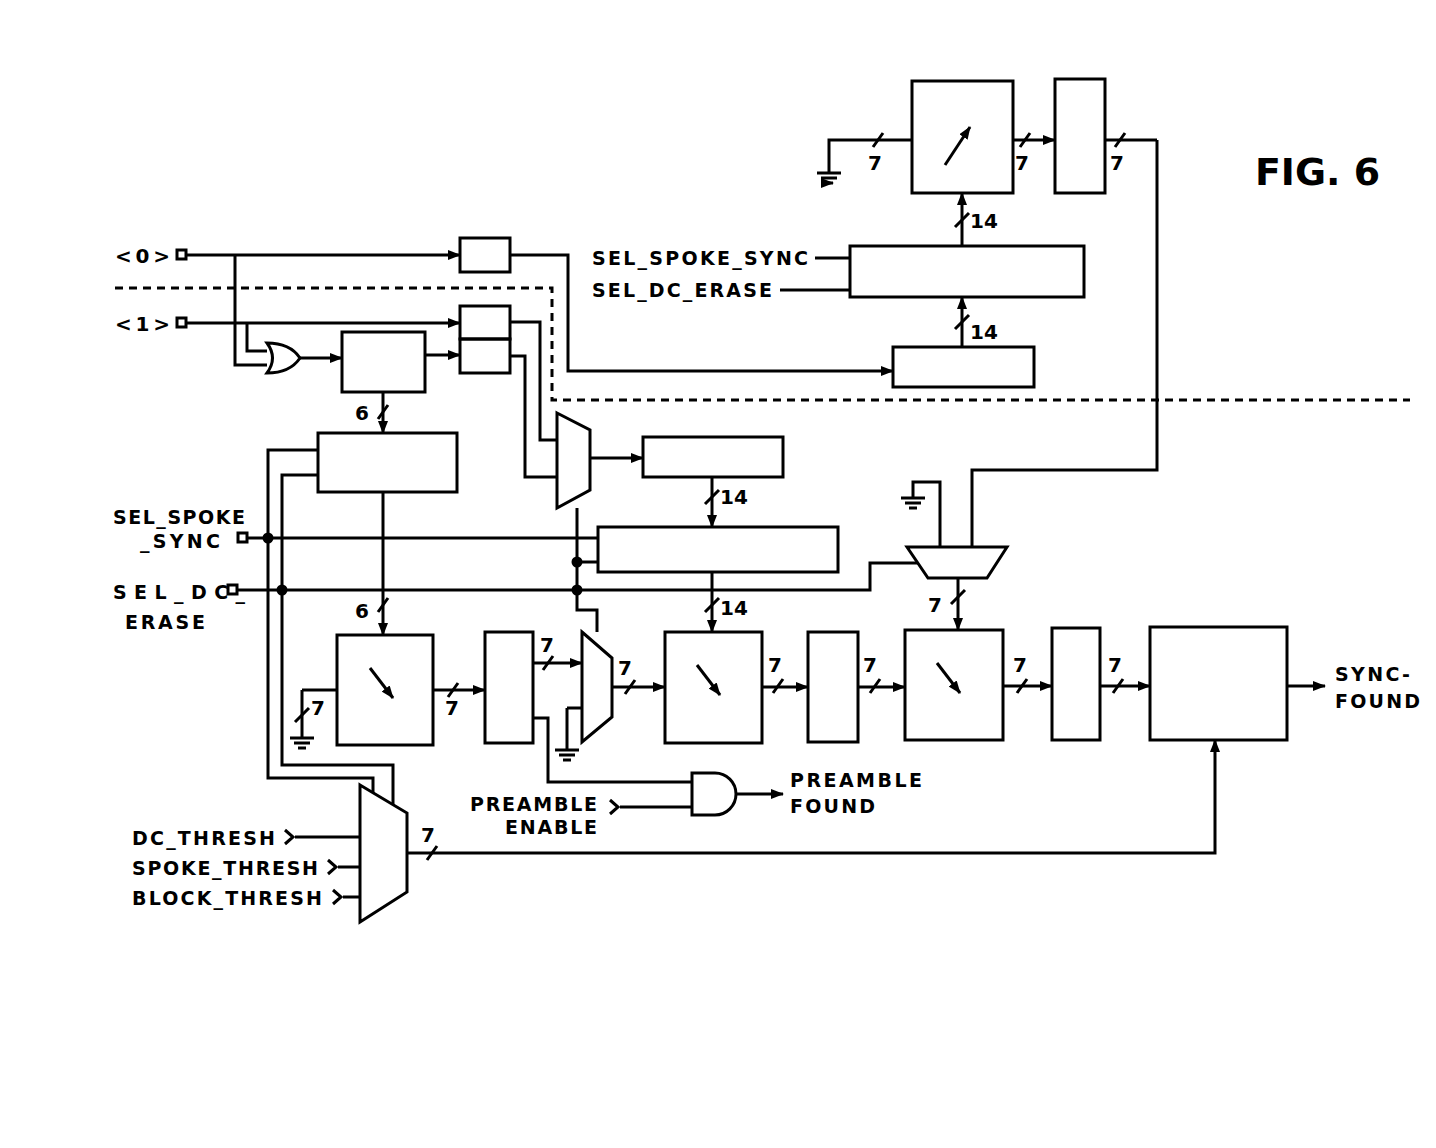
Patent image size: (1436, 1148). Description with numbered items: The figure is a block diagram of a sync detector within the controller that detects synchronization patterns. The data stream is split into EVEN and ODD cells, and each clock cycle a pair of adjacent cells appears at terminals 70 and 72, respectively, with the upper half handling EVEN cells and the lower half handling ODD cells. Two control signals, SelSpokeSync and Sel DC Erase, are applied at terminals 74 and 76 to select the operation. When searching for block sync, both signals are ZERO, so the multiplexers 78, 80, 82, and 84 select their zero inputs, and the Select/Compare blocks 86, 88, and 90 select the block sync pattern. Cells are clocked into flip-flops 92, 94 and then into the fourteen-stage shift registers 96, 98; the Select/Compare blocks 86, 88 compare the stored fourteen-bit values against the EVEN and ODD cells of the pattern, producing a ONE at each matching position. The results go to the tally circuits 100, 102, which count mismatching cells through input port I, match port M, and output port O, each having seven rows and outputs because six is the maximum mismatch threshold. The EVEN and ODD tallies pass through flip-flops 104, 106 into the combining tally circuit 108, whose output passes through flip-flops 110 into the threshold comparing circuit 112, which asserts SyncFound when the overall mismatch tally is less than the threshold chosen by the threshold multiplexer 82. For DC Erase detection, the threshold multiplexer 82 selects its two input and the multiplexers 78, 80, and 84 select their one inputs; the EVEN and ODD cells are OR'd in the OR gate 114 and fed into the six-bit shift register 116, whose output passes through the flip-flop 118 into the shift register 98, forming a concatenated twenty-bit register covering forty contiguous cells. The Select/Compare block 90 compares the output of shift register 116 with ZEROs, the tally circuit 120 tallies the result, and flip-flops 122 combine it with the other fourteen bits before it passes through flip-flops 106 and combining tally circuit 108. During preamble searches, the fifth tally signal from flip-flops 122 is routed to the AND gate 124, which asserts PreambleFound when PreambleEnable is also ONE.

The terminal 70 is at (184, 250).
The terminal 72 is at (184, 328).
The terminal 74 is at (243, 545).
The terminal 76 is at (240, 598).
The multiplexer 78 is at (598, 478).
The multiplexer 80 is at (612, 705).
The threshold multiplexer 82 is at (407, 878).
The multiplexer 84 is at (997, 560).
The Select/Compare block 86 is at (1040, 297).
The Select/Compare block 88 is at (810, 527).
The Select/Compare block 90 is at (457, 452).
The flip-flop 92 is at (462, 236).
The flip-flop 94 is at (458, 306).
The shift register 96 is at (1034, 371).
The shift register 98 is at (783, 455).
The tally circuit 100 is at (918, 193).
The tally circuit 102 is at (666, 632).
The flip-flops 104 is at (1085, 193).
The flip-flops 106 is at (830, 632).
The combining tally circuit 108 is at (980, 740).
The flip-flops 110 is at (1085, 740).
The threshold comparing circuit 112 is at (1220, 627).
The OR gate 114 is at (270, 372).
The shift register 116 is at (342, 373).
The flip-flop 118 is at (485, 373).
The tally circuit 120 is at (412, 635).
The flip-flops 122 is at (507, 632).
The AND gate 124 is at (725, 815).